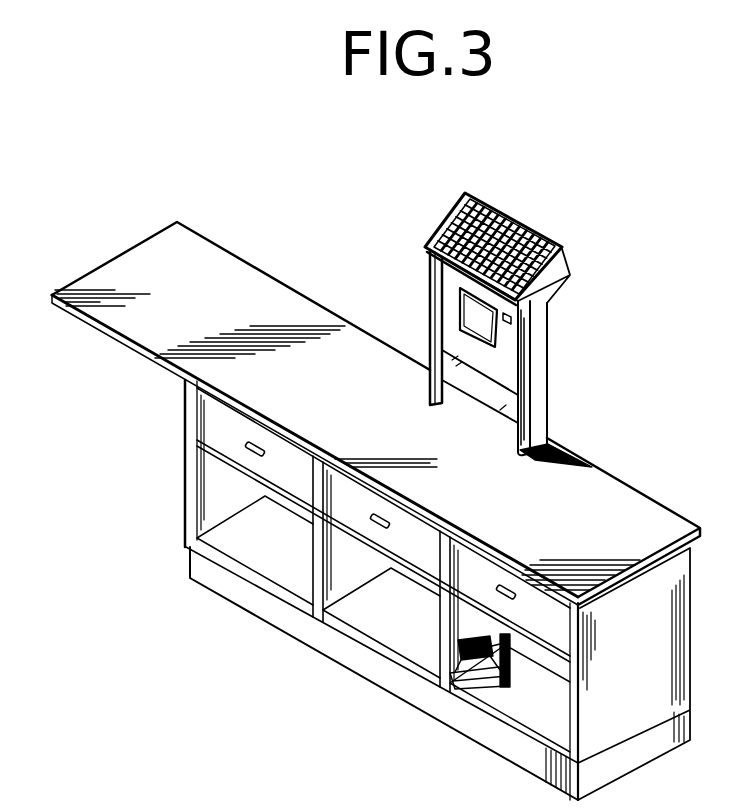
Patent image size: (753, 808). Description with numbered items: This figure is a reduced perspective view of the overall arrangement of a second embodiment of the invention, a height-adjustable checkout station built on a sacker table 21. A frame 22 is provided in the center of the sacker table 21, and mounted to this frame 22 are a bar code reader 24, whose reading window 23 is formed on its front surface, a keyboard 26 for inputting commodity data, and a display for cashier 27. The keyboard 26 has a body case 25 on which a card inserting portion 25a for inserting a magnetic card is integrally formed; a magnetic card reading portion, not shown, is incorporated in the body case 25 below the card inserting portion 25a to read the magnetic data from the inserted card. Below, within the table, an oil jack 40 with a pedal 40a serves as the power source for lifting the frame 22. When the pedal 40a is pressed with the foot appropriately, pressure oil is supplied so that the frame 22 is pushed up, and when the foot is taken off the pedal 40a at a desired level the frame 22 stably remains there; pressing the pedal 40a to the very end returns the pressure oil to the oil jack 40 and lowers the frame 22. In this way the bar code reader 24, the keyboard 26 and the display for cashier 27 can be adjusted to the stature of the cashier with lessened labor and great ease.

The sacker table 21 is at (313, 323).
The frame 22 is at (613, 412).
The reading window 23 is at (472, 308).
The bar code reader 24 is at (512, 338).
The body case 25 is at (518, 219).
The card inserting portion 25a is at (563, 263).
The keyboard 26 is at (447, 222).
The display for cashier 27 is at (487, 392).
The oil jack 40 is at (493, 663).
The pedal 40a is at (442, 672).